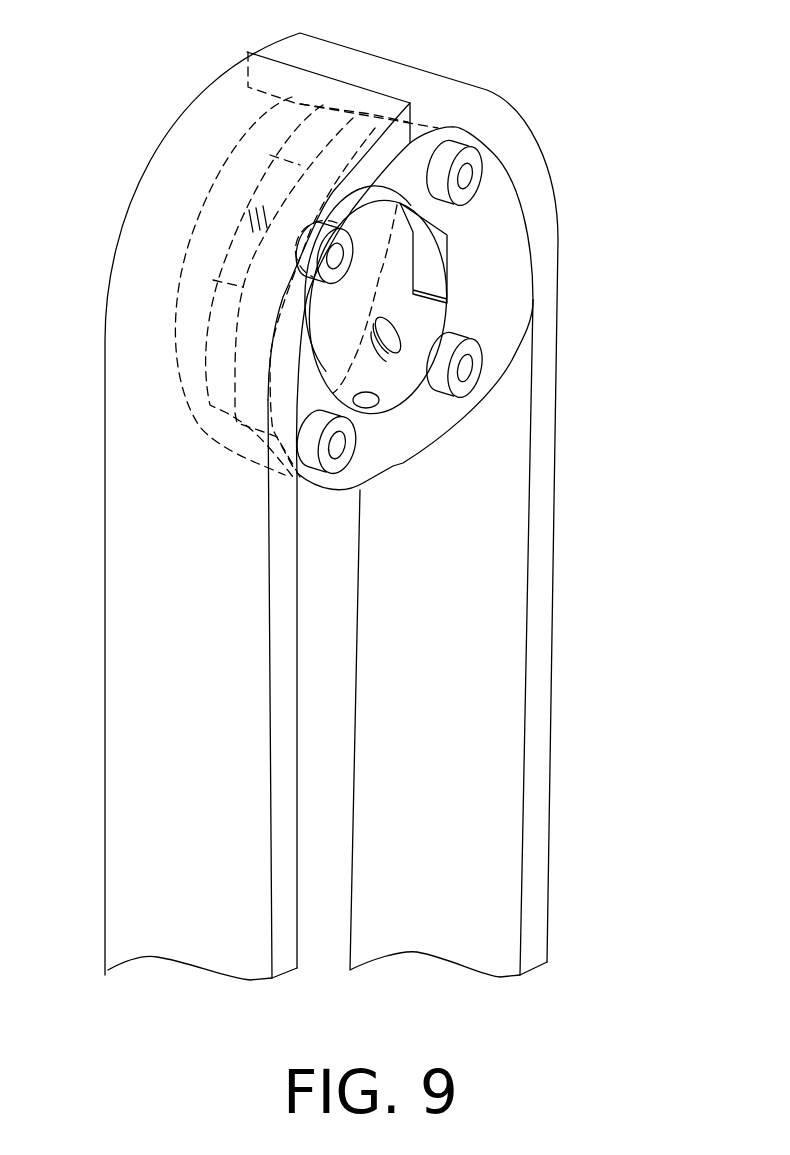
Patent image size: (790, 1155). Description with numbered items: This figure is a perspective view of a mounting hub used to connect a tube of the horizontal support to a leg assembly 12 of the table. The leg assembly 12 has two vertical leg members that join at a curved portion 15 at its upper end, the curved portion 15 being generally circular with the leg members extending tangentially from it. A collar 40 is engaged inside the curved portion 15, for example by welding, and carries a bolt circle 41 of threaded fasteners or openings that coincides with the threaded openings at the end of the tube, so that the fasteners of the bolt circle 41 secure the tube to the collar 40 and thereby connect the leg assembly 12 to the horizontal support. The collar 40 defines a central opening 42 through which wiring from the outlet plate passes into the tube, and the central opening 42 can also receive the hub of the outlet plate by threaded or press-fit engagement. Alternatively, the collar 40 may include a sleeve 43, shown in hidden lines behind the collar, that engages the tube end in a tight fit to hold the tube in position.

The leg assembly 12 is at (533, 678).
The curved portion 15 is at (417, 72).
The collar 40 is at (493, 217).
The bolt circle 41 is at (463, 200).
The central opening 42 is at (397, 377).
The sleeve 43 is at (220, 202).